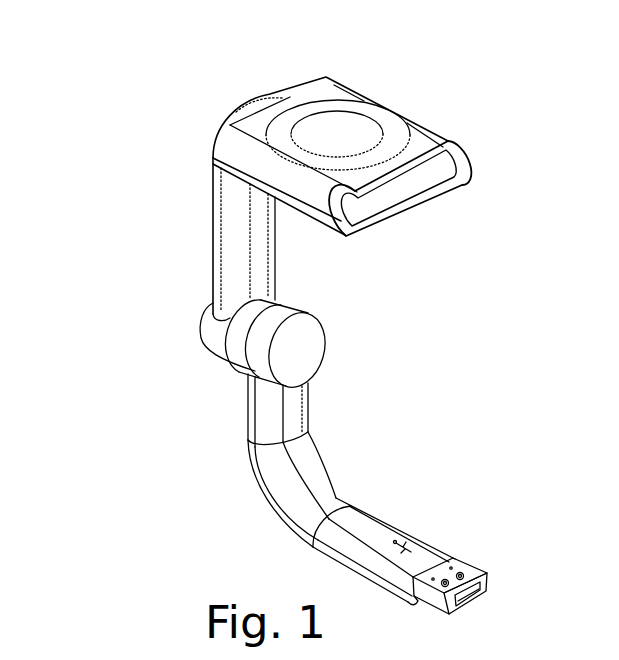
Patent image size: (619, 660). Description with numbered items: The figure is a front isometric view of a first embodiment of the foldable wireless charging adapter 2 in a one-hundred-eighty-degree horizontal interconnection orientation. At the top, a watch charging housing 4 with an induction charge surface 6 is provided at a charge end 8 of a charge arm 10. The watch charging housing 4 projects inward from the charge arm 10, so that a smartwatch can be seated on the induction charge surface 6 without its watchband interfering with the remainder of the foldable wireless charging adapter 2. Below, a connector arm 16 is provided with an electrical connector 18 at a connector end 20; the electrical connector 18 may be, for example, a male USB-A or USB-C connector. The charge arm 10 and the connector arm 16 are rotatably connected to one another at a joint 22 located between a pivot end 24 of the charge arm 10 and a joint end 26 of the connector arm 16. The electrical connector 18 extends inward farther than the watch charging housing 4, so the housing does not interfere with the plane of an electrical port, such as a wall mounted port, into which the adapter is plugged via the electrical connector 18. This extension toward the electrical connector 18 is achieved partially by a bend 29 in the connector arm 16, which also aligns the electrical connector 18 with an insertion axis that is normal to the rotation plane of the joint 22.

The foldable wireless charging adapter 2 is at (180, 83).
The charge end 8 is at (270, 83).
The induction charge surface 6 is at (357, 128).
The watch charging housing 4 is at (400, 211).
The charge arm 10 is at (213, 215).
The pivot end 24 is at (210, 302).
The joint 22 is at (205, 322).
The joint end 26 is at (244, 369).
The connector arm 16 is at (258, 488).
The bend 29 is at (351, 488).
The connector end 20 is at (447, 552).
The electrical connector 18 is at (457, 567).